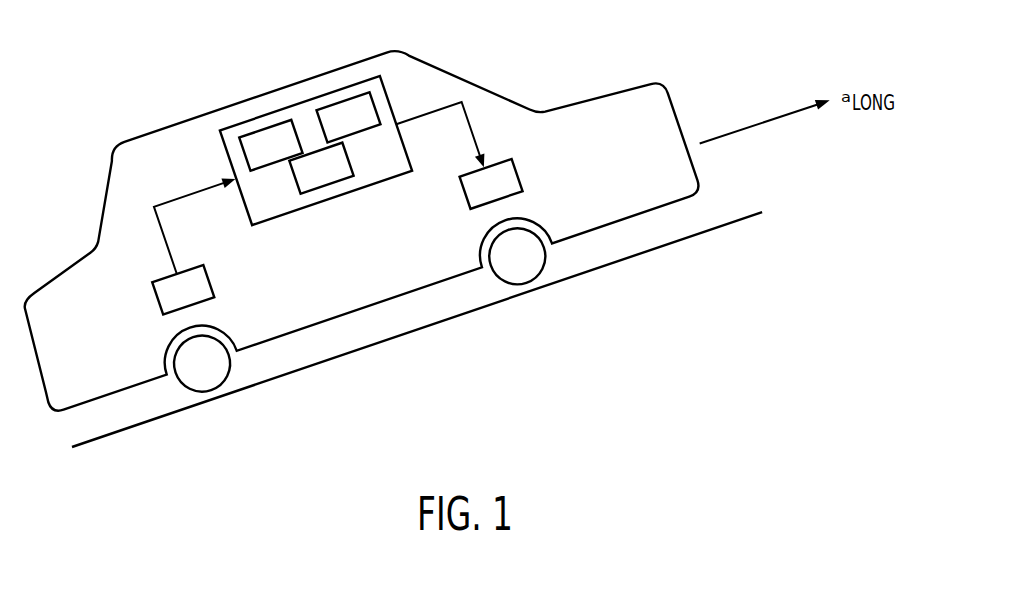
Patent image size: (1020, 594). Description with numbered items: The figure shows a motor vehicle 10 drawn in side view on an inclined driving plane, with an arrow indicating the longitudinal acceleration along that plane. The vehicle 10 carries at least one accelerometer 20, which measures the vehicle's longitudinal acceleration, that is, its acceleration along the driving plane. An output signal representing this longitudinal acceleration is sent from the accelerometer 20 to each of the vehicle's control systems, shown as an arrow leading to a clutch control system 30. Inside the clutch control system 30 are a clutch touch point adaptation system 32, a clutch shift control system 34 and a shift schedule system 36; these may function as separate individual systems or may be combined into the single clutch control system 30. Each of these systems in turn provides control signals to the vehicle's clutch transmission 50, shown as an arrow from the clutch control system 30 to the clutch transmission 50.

The vehicle 10 is at (493, 92).
The accelerometer 20 is at (183, 290).
The clutch control system 30 is at (300, 103).
The clutch touch point adaptation system 32 is at (270, 145).
The clutch shift control system 34 is at (349, 117).
The shift schedule system 36 is at (321, 168).
The clutch transmission 50 is at (491, 184).